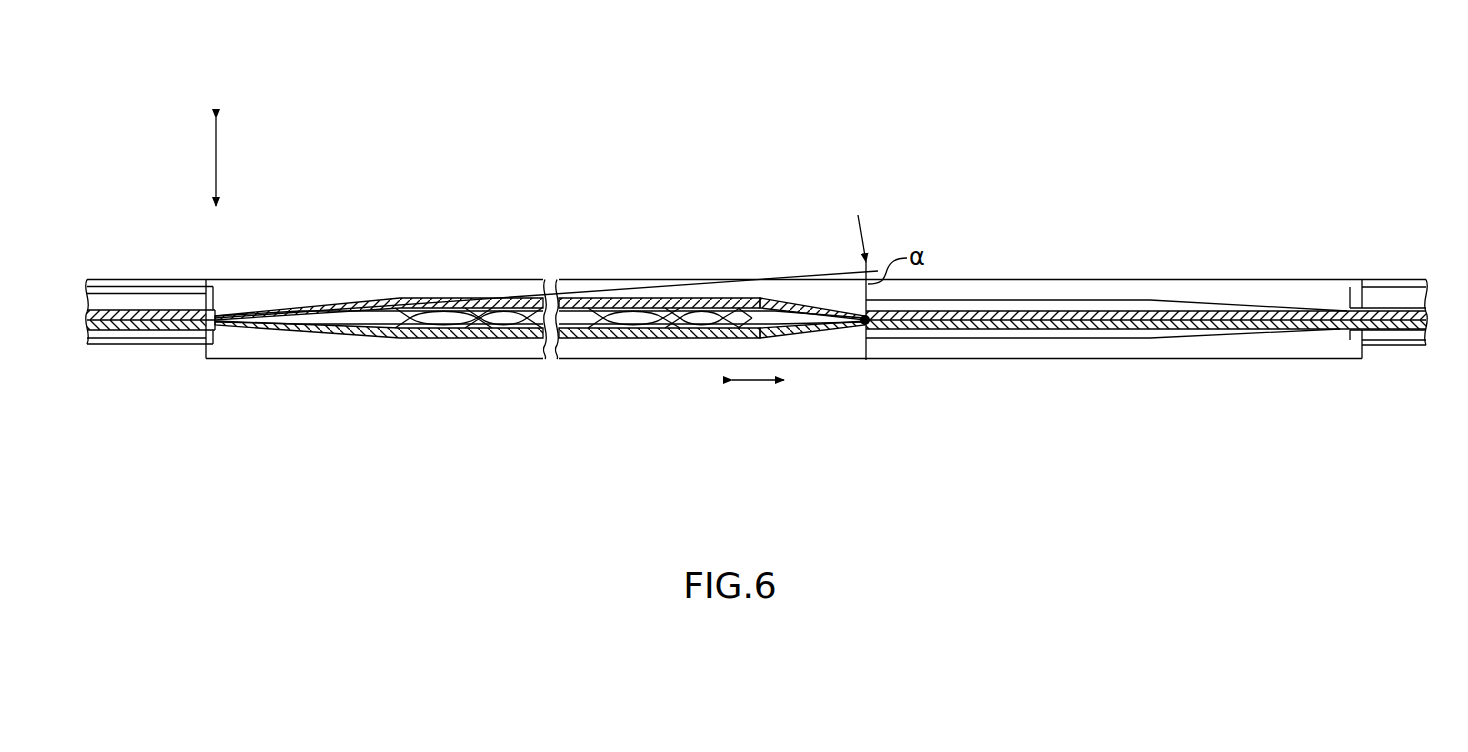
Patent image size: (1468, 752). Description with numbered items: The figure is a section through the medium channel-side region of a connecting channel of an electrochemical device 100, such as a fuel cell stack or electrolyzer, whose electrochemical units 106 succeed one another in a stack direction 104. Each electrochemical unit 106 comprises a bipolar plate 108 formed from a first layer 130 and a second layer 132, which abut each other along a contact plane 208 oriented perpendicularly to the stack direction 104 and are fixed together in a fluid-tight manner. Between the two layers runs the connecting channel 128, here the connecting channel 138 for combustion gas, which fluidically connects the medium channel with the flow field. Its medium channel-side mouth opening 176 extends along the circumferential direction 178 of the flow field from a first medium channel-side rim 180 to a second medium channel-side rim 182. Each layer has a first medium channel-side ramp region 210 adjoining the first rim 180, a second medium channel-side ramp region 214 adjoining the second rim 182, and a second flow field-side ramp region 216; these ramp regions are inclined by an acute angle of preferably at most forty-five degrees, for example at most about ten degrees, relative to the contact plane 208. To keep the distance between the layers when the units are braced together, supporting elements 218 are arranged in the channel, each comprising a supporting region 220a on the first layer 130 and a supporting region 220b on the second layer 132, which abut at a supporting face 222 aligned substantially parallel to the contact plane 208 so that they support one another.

The electrochemical device 100 is at (1388, 256).
The stack direction 104 is at (214, 160).
The electrochemical unit 106 is at (155, 260).
The bipolar plate 108 is at (1380, 346).
The connecting channel 128 is at (489, 336).
The first layer 130 is at (1340, 311).
The second layer 132 is at (1356, 360).
The connecting channel for combustion gas 138 is at (602, 338).
The medium channel-side mouth opening 176 is at (524, 338).
The circumferential direction 178 is at (745, 383).
The first medium channel-side rim 180 is at (233, 312).
The second medium channel-side rim 182 is at (912, 326).
The contact plane 208 is at (213, 360).
The first medium channel-side ramp region 210 is at (330, 300).
The second medium channel-side ramp region 214 is at (812, 300).
The second flow field-side ramp region 216 is at (1195, 300).
The supporting element 218 is at (438, 342).
The supporting region 220a is at (690, 308).
The supporting region 220b is at (688, 336).
The supporting face 222 is at (696, 316).